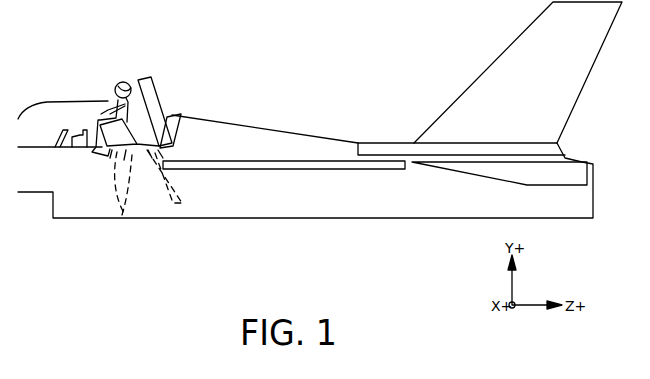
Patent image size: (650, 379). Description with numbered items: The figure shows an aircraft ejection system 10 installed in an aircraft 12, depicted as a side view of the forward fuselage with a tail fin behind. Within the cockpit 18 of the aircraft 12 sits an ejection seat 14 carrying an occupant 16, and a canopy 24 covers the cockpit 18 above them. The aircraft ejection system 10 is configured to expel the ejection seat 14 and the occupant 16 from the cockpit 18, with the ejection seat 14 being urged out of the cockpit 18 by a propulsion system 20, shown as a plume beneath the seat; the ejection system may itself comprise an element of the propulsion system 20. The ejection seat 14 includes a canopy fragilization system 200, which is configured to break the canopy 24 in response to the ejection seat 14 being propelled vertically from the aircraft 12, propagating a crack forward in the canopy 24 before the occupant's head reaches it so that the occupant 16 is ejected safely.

The aircraft ejection system 10 is at (253, 58).
The aircraft 12 is at (333, 201).
The ejection seat 14 is at (152, 93).
The occupant 16 is at (118, 84).
The cockpit 18 is at (45, 133).
The propulsion system 20 is at (118, 183).
The canopy 24 is at (62, 99).
The canopy fragilization system 200 is at (143, 112).